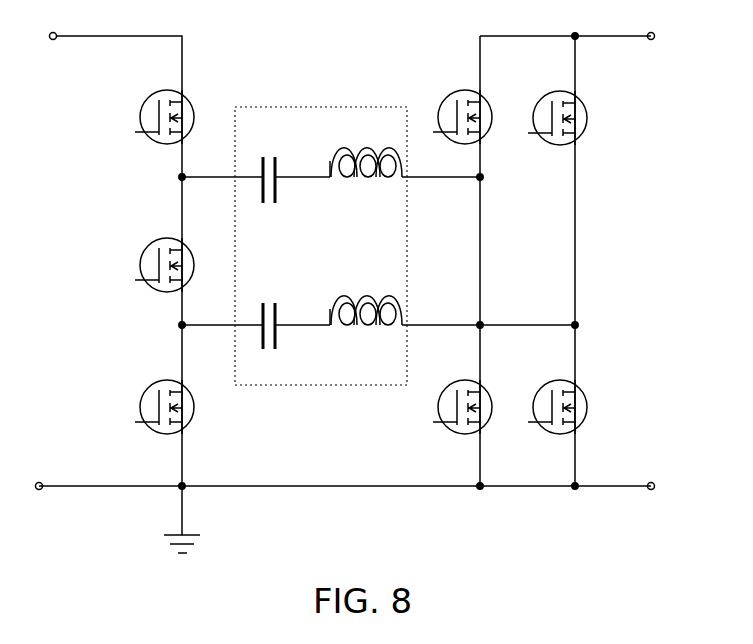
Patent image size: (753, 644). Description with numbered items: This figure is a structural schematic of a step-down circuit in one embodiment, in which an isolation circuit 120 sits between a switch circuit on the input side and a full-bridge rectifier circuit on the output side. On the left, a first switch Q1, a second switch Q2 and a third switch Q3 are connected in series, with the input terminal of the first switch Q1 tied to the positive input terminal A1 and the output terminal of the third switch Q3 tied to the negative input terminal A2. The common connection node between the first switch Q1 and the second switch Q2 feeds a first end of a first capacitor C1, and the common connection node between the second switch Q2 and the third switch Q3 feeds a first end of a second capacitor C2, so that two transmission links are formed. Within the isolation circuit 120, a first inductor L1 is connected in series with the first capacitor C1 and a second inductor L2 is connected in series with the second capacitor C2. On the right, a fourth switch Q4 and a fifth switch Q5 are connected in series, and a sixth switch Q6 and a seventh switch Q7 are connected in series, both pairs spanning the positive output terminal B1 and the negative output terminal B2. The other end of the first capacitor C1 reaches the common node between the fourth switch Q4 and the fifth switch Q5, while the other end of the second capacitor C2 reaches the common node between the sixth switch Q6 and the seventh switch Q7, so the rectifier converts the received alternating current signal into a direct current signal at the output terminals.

The isolation circuit 120 is at (294, 107).
The first switch Q1 is at (164, 103).
The second switch Q2 is at (164, 251).
The third switch Q3 is at (164, 392).
The fourth switch Q4 is at (462, 103).
The fifth switch Q5 is at (462, 393).
The sixth switch Q6 is at (557, 103).
The seventh switch Q7 is at (557, 393).
The first inductor L1 is at (366, 146).
The second inductor L2 is at (366, 295).
The first capacitor C1 is at (270, 197).
The second capacitor C2 is at (270, 345).
The positive input terminal A1 is at (41, 26).
The negative input terminal A2 is at (30, 507).
The positive output terminal B1 is at (678, 34).
The negative output terminal B2 is at (662, 508).